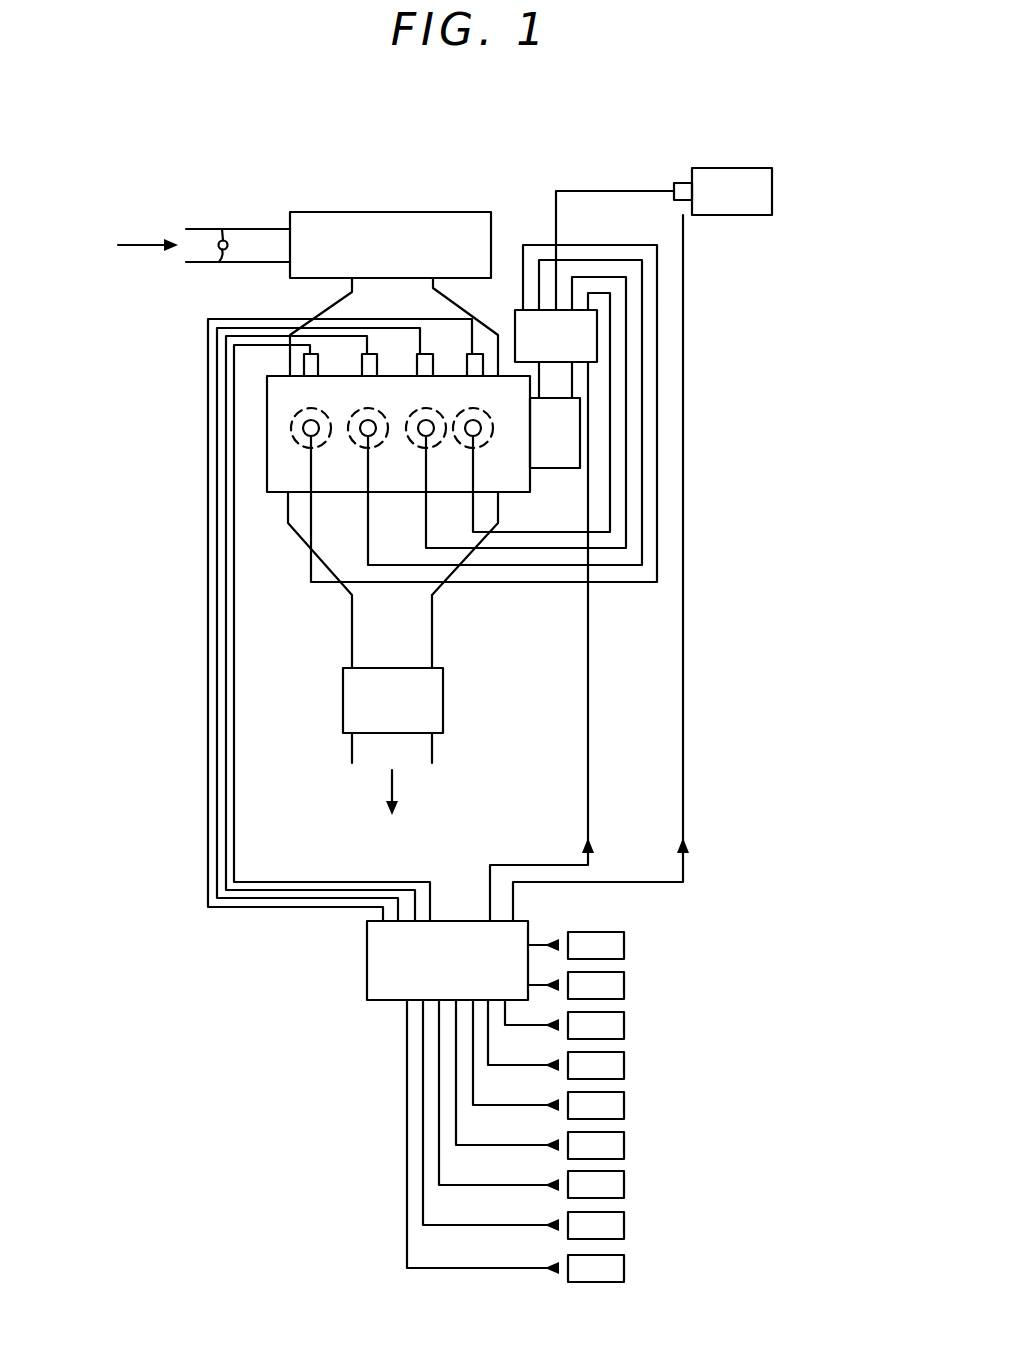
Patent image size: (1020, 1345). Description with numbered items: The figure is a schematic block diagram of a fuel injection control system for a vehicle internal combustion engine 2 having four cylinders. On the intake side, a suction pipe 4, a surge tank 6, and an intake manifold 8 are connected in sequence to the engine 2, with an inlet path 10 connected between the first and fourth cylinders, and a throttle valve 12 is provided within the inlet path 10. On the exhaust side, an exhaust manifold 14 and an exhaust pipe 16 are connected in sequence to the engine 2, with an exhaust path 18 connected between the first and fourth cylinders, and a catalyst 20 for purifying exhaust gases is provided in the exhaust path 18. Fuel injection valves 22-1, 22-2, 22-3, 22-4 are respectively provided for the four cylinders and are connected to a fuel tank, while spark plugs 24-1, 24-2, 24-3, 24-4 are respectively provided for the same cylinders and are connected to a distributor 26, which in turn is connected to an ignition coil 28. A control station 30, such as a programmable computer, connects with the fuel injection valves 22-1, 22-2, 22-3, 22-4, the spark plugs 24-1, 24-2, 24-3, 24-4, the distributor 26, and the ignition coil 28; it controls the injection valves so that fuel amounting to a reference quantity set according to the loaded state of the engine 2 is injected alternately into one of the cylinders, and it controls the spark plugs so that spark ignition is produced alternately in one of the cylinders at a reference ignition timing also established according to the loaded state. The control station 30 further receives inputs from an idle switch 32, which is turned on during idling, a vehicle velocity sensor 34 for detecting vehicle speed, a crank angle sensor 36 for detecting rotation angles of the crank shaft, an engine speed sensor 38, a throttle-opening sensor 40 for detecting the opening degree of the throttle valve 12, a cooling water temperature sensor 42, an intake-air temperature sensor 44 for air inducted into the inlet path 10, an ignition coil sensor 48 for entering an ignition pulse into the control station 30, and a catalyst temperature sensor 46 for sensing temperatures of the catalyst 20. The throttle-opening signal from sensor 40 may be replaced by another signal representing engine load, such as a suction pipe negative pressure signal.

The internal combustion engine 2 is at (258, 370).
The suction pipe 4 is at (251, 222).
The surge tank 6 is at (388, 213).
The intake manifold 8 is at (453, 285).
The inlet path 10 is at (317, 232).
The throttle valve 12 is at (220, 233).
The exhaust manifold 14 is at (293, 545).
The exhaust pipe 16 is at (394, 631).
The exhaust path 18 is at (412, 615).
The catalyst 20 is at (425, 689).
The fuel injection valve 22-1 is at (315, 352).
The fuel injection valve 22-2 is at (373, 352).
The fuel injection valve 22-3 is at (421, 352).
The fuel injection valve 22-4 is at (478, 352).
The spark plug 24-1 is at (219, 397).
The spark plug 24-2 is at (253, 464).
The spark plug 24-3 is at (599, 465).
The spark plug 24-4 is at (622, 397).
The distributor 26 is at (580, 332).
The ignition coil 28 is at (723, 180).
The control station 30 is at (367, 957).
The idle switch 32 is at (617, 952).
The vehicle velocity sensor 34 is at (617, 992).
The crank angle sensor 36 is at (617, 1032).
The engine speed sensor 38 is at (617, 1072).
The throttle-opening sensor 40 is at (617, 1112).
The cooling water temperature sensor 42 is at (617, 1152).
The intake-air temperature sensor 44 is at (617, 1192).
The catalyst temperature sensor 46 is at (617, 1275).
The ignition coil sensor 48 is at (617, 1232).